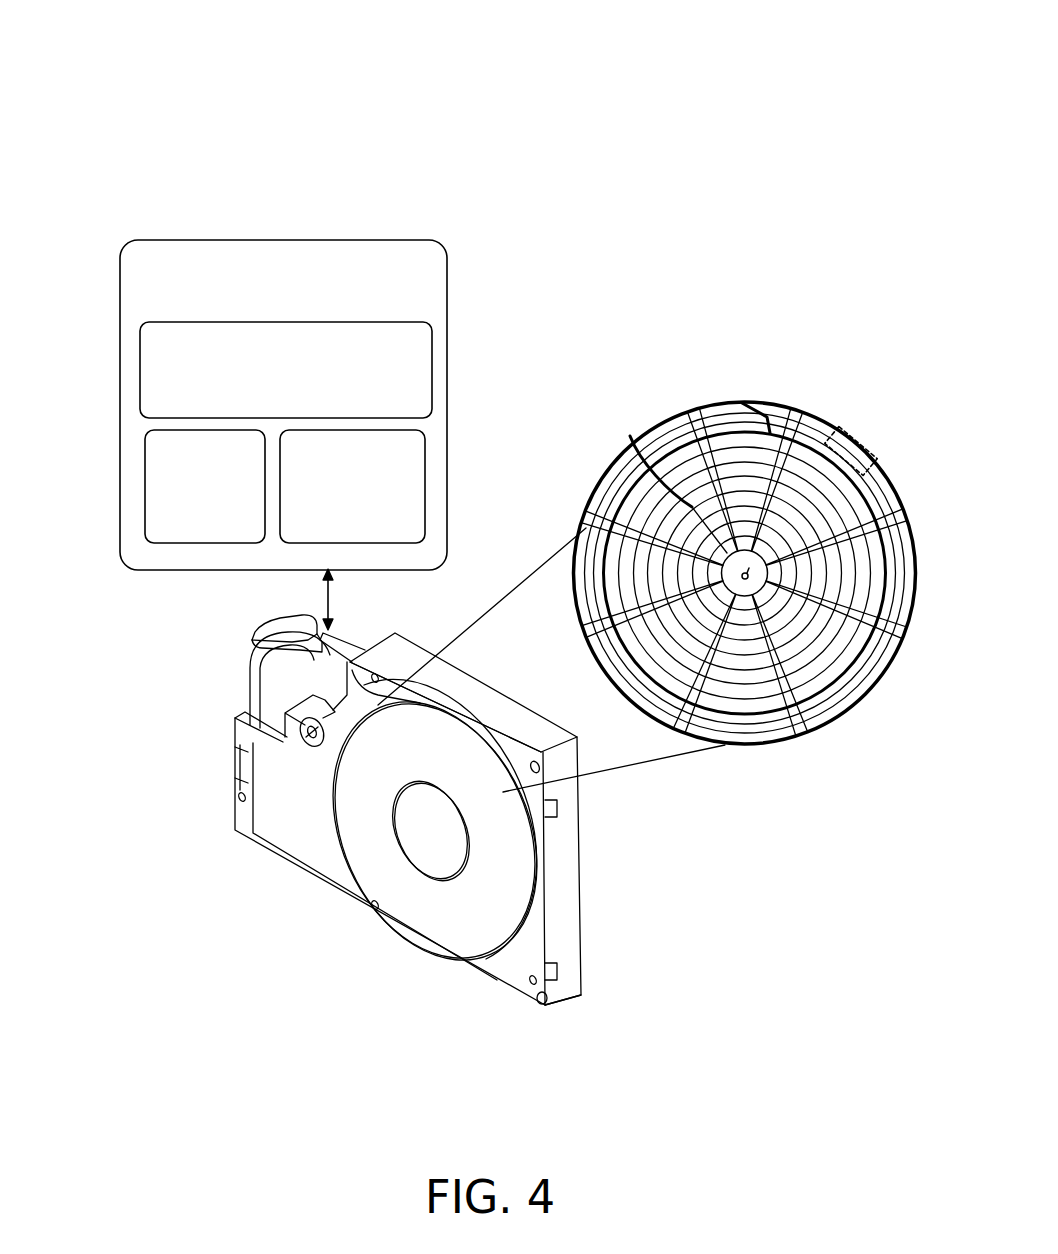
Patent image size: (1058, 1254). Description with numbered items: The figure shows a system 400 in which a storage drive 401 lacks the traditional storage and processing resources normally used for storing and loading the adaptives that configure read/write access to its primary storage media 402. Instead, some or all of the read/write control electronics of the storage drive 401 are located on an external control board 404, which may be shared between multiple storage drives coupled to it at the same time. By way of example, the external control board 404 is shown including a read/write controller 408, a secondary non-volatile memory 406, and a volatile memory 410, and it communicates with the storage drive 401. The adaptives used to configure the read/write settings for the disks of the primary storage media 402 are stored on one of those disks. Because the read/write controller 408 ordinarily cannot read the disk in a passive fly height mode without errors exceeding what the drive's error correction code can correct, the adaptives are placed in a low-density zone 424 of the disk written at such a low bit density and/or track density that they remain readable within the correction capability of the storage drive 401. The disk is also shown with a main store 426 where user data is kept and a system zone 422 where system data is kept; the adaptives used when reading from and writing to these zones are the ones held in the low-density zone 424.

The system 400 is at (155, 112).
The storage drive 401 is at (581, 915).
The primary storage media 402 is at (449, 768).
The external control board 404 is at (263, 300).
The secondary non-volatile memory 406 is at (266, 413).
The read/write controller 408 is at (332, 528).
The volatile memory 410 is at (185, 528).
The system zone 422 is at (742, 403).
The low-density zone 424 is at (870, 455).
The main store 426 is at (630, 436).